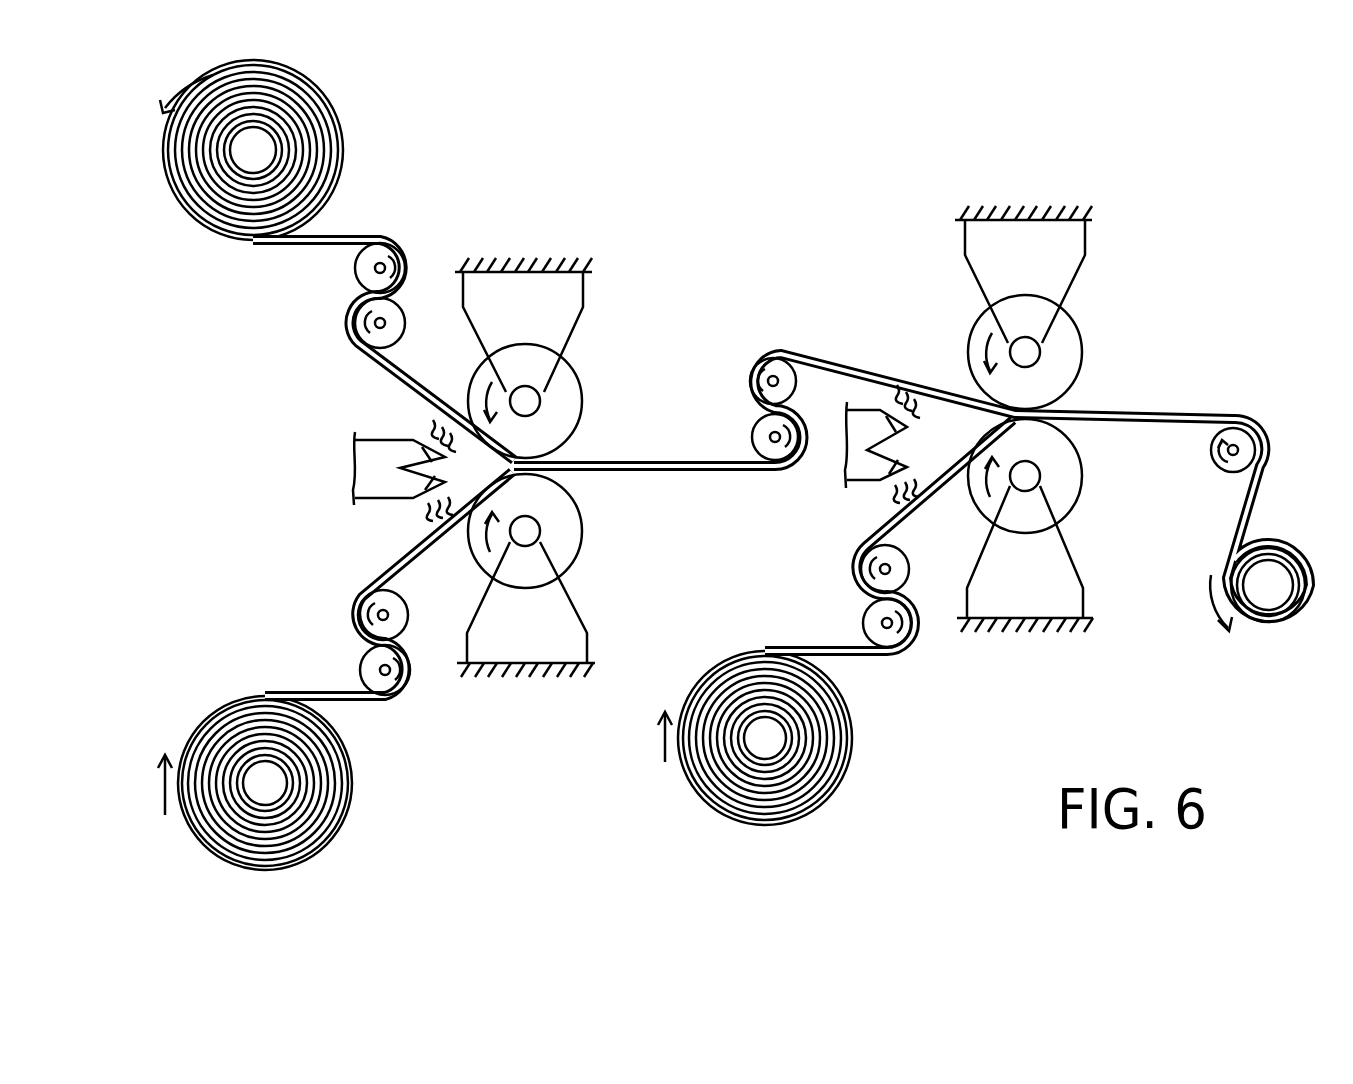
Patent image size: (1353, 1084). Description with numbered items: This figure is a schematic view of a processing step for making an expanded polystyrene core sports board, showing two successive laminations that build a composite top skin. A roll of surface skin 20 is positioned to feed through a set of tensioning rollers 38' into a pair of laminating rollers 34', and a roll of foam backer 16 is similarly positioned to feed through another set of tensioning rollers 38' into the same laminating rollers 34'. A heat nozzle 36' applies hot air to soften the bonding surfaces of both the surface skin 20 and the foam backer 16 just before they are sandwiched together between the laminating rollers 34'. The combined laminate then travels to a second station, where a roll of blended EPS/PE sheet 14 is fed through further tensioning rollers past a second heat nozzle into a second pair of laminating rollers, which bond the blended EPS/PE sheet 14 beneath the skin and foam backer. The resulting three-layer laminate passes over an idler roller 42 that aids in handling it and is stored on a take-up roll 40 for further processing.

The surface skin 20 is at (320, 80).
The foam backer 16 is at (245, 697).
The blended EPS/PE sheet 14 is at (857, 730).
The take-up roll 40 is at (1308, 580).
The idler roller 42 is at (1218, 470).
The tensioning rollers 38' is at (370, 469).
The laminating rollers 34' is at (556, 467).
The heat nozzle 36' is at (364, 493).